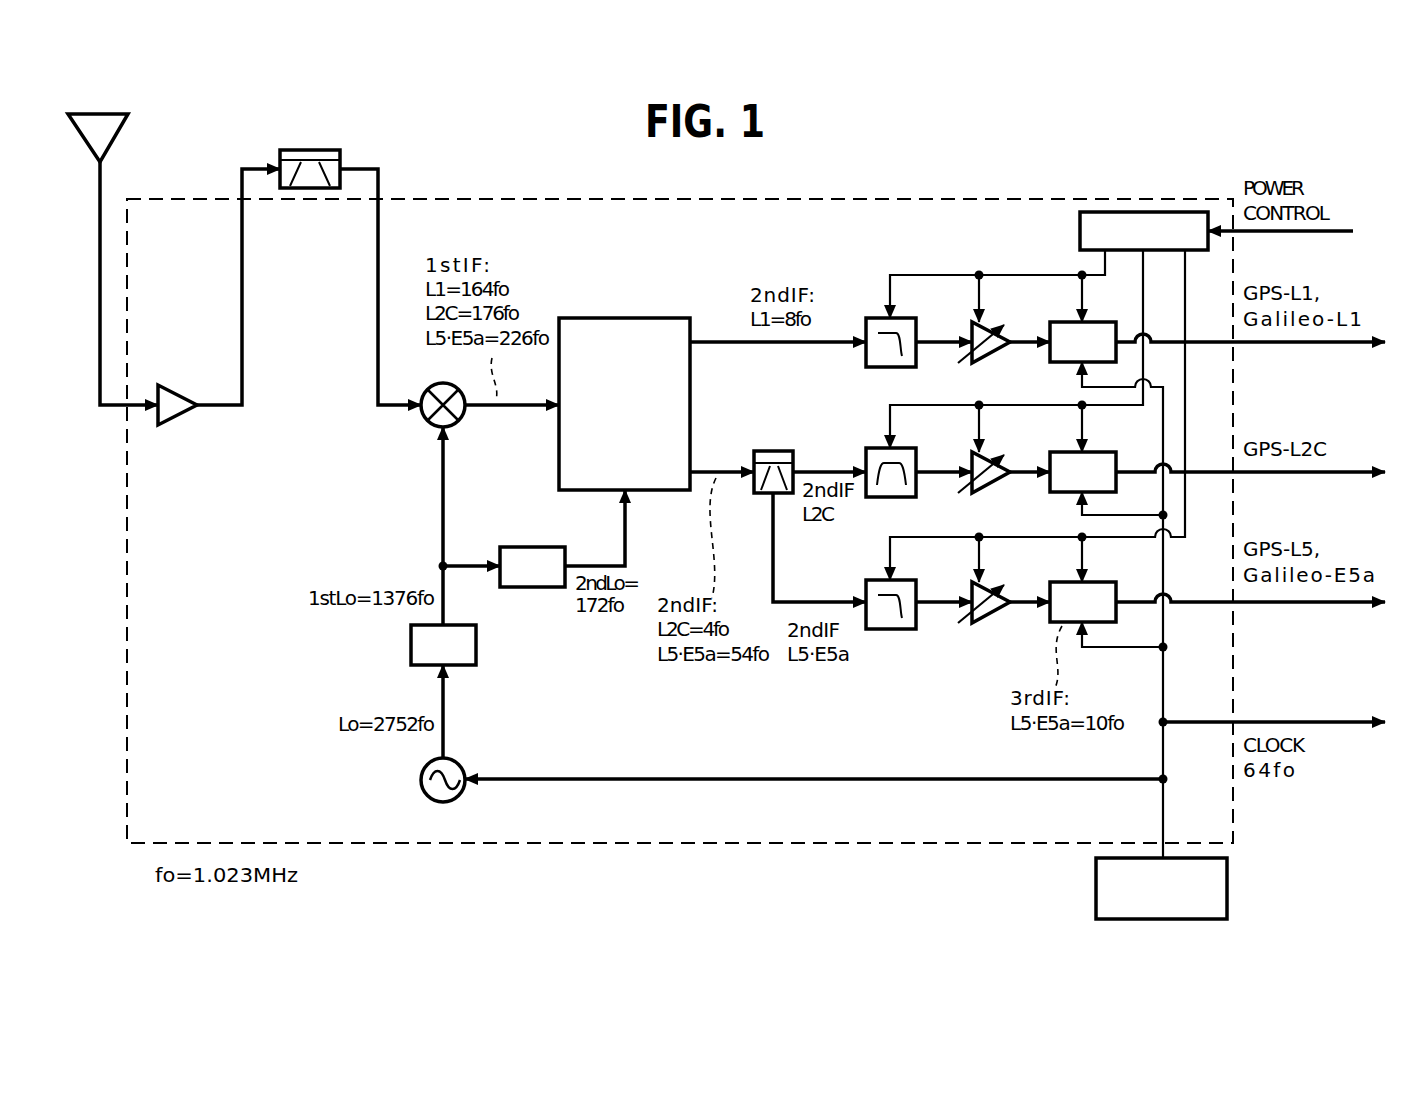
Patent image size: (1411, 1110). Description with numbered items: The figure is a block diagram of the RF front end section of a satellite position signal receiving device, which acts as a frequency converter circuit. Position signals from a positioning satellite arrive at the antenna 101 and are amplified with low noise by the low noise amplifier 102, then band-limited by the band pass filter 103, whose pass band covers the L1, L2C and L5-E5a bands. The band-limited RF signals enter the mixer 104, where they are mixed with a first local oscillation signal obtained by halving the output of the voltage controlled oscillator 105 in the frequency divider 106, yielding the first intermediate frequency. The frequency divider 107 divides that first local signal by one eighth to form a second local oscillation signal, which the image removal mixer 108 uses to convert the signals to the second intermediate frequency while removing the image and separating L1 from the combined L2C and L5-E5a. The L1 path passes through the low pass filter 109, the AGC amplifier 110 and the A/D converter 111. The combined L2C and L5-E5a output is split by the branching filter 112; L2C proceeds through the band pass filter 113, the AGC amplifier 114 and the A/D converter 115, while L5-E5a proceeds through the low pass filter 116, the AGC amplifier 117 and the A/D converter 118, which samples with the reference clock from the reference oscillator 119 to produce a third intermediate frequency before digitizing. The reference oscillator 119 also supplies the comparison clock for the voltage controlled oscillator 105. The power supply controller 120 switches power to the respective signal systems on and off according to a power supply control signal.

The antenna 101 is at (118, 136).
The low noise amplifier (LNA) 102 is at (172, 385).
The band pass filter (BPF) 103 is at (342, 156).
The mixer 104 is at (428, 421).
The voltage controlled oscillator (VCO) 105 is at (458, 764).
The frequency divider 106 is at (477, 644).
The frequency divider 107 is at (528, 546).
The image removal mixer 108 is at (677, 317).
The low pass filter (LPF) 109 is at (906, 318).
The AGC amplifier 110 is at (988, 322).
The A/D converter 111 is at (1092, 322).
The branching filter 112 is at (777, 450).
The band pass filter (BPF) 113 is at (906, 448).
The AGC amplifier 114 is at (988, 452).
The A/D converter 115 is at (1092, 452).
The low pass filter (LPF) 116 is at (906, 580).
The AGC amplifier 117 is at (988, 582).
The A/D converter 118 is at (1092, 582).
The reference oscillator 119 is at (1228, 870).
The power supply controller 120 is at (1079, 234).